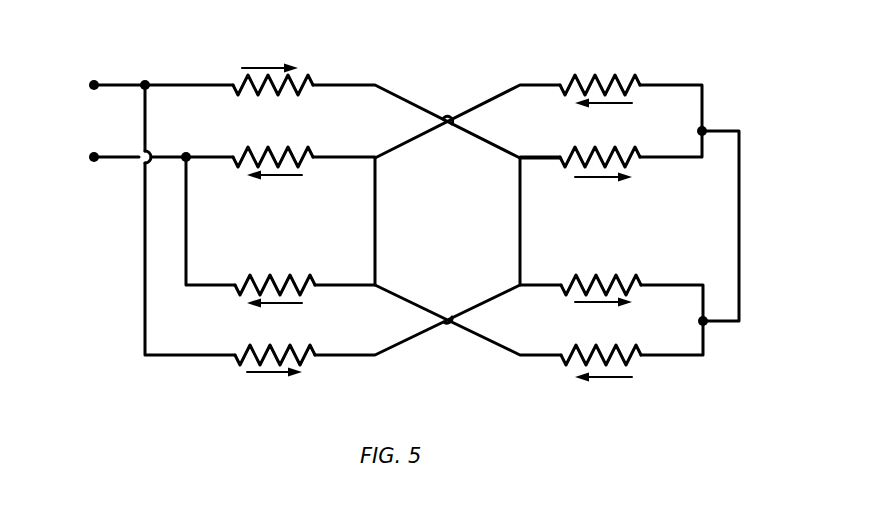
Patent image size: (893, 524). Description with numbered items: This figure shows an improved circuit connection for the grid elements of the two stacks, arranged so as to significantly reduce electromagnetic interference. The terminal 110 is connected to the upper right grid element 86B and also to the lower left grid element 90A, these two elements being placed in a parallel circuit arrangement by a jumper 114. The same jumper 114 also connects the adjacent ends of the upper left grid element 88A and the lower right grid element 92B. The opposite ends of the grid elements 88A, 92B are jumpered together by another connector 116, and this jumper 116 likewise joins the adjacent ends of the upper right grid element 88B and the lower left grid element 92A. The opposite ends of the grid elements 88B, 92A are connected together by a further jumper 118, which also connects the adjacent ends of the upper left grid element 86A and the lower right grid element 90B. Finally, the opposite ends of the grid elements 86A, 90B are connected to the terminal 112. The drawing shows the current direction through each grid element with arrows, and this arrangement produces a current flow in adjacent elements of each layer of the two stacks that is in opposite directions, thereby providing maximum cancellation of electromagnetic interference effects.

The terminal 110 is at (95, 84).
The terminal 112 is at (95, 158).
The upper left grid element 86A is at (300, 153).
The upper right grid element 86B is at (305, 80).
The upper left grid element 88A is at (568, 160).
The upper right grid element 88B is at (593, 83).
The lower left grid element 90A is at (240, 358).
The lower right grid element 90B is at (272, 283).
The lower left grid element 92A is at (640, 358).
The lower right grid element 92B is at (632, 283).
The jumper 114 is at (376, 228).
The jumper 116 is at (739, 215).
The jumper 118 is at (522, 170).